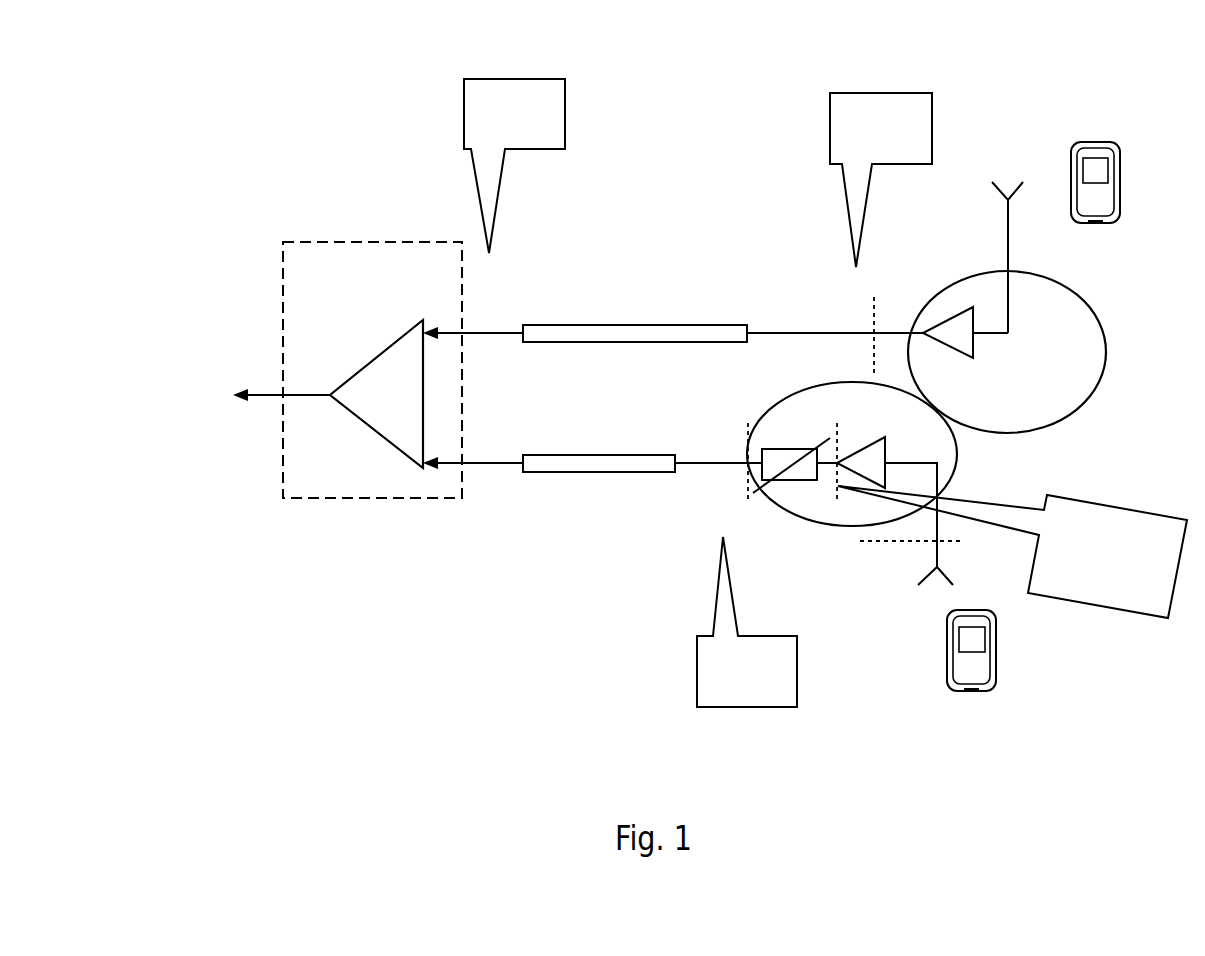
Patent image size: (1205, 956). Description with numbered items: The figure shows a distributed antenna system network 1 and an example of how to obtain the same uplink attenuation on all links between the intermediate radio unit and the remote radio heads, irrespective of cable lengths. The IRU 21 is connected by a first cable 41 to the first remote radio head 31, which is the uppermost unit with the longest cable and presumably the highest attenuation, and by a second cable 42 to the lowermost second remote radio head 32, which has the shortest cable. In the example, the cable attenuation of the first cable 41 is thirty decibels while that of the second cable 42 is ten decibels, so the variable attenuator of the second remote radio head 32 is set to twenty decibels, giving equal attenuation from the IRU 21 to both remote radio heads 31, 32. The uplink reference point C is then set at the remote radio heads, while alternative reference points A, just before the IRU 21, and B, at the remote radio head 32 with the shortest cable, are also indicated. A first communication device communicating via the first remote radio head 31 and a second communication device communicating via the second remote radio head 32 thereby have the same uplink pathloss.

The distributed antenna system network 1 is at (791, 68).
The intermediate radio unit (IRU) 21 is at (387, 254).
The first remote radio head 31 is at (1082, 330).
The second remote radio head 32 is at (948, 460).
The first cable 41 is at (686, 334).
The second cable 42 is at (666, 464).